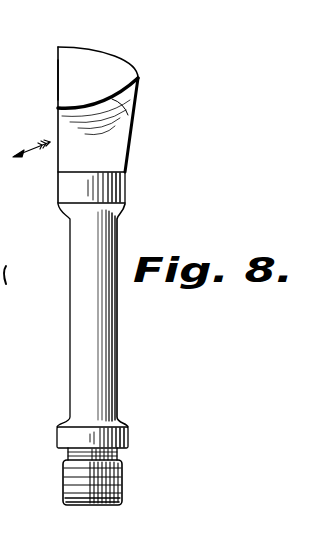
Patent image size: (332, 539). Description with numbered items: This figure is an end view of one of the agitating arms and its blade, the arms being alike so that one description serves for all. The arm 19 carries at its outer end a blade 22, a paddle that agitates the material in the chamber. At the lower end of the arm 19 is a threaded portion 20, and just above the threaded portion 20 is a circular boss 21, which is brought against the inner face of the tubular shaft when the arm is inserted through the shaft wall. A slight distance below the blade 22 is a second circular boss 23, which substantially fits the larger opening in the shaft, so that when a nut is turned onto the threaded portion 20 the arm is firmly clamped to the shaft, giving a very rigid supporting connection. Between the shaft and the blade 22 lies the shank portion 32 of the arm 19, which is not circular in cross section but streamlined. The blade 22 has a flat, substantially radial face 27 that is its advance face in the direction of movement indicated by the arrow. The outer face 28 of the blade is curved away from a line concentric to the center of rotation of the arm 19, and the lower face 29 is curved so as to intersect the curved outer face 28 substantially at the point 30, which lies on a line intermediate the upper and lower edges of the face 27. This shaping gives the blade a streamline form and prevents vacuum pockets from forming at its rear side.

The arm 19 is at (82, 337).
The threaded portion 20 is at (77, 484).
The circular boss 21 is at (128, 433).
The blade 22 is at (55, 107).
The circular boss 23 is at (113, 188).
The flat substantially radial face 27 is at (57, 82).
The outer face 28 is at (103, 55).
The lower face 29 is at (133, 112).
The point 30 is at (139, 78).
The shank portion 32 is at (113, 145).